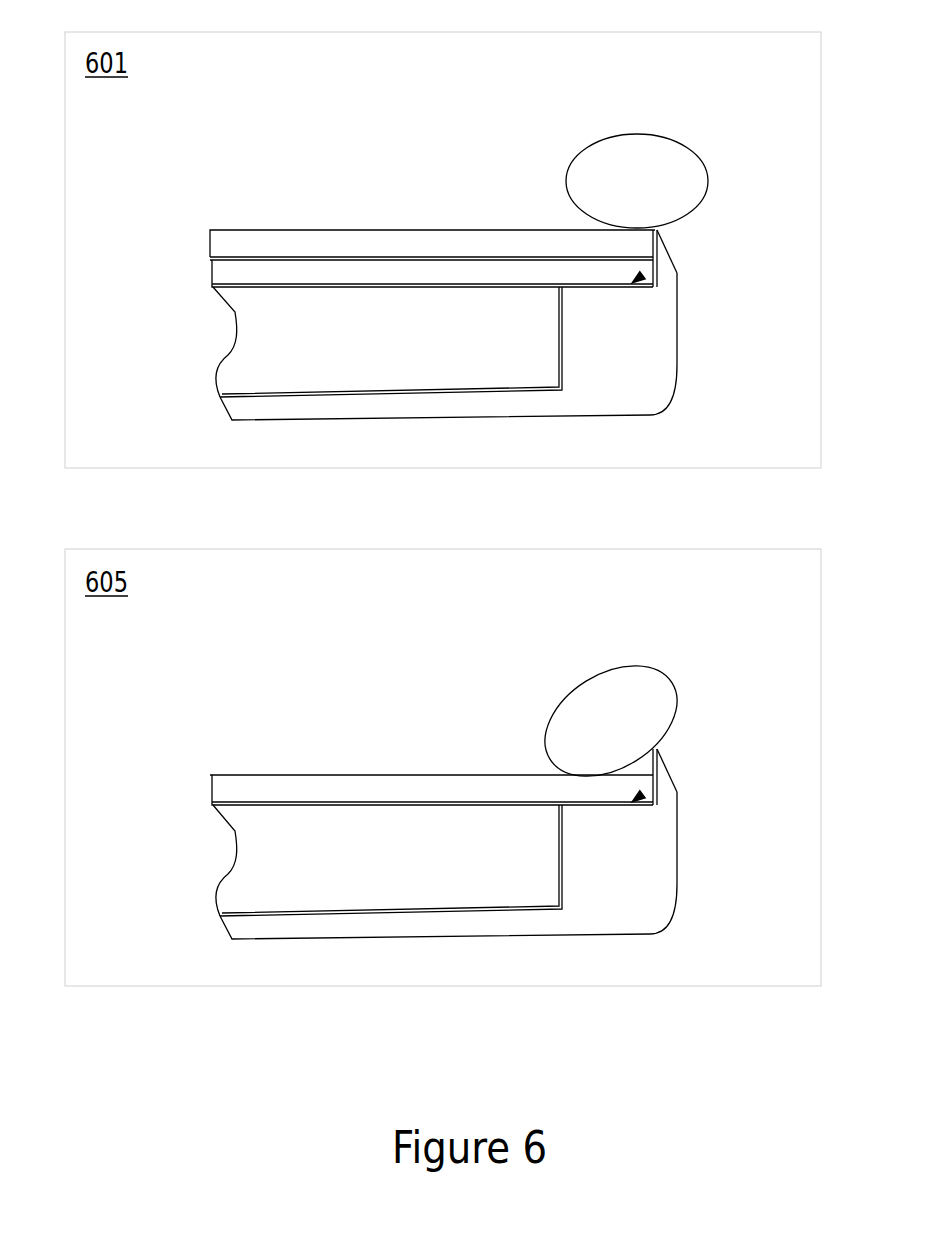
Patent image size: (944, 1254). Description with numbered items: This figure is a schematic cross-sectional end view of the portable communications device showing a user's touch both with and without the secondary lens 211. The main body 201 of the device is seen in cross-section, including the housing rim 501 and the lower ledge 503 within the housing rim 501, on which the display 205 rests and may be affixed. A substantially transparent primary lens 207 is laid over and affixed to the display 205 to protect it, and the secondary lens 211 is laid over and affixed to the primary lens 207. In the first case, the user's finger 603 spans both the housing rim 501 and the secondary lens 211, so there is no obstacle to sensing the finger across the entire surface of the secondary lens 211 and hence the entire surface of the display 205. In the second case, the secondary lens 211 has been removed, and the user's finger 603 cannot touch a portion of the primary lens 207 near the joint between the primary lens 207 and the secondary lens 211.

The main body 201 is at (645, 348).
The display 205 is at (238, 305).
The primary lens 207 is at (218, 269).
The secondary lens 211 is at (220, 237).
The housing rim 501 is at (663, 253).
The lower ledge 503 is at (634, 281).
The user's finger 603 is at (666, 180).